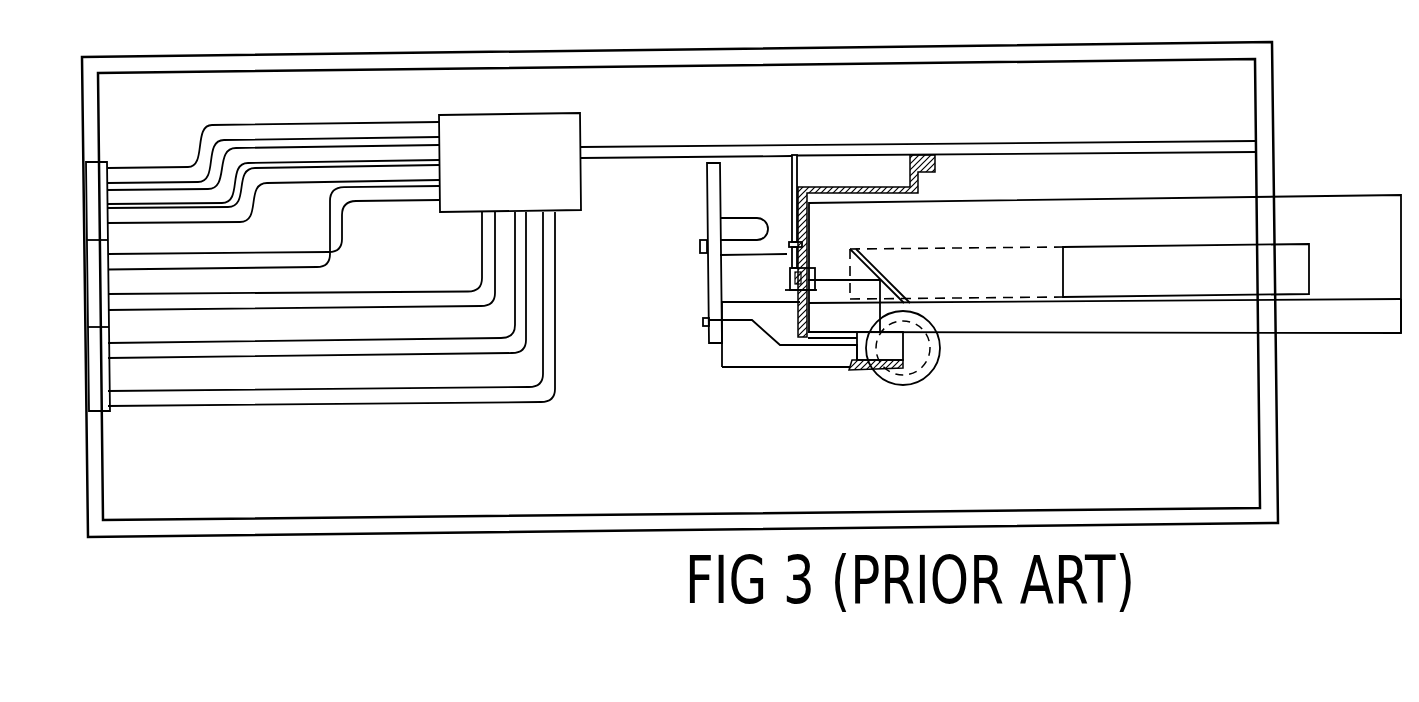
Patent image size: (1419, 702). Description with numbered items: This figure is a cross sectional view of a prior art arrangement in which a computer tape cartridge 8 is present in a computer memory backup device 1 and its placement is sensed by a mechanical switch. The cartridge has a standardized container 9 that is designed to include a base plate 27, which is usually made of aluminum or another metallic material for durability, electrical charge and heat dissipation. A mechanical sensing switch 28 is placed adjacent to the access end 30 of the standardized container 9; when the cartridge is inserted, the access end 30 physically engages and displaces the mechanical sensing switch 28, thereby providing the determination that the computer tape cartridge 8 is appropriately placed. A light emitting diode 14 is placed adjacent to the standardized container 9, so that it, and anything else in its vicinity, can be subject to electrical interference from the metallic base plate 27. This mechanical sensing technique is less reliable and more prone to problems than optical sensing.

The computer memory backup device 1 is at (850, 44).
The computer tape cartridge 8 is at (1295, 198).
The standardized container 9 is at (1141, 200).
The light emitting diode 14 is at (865, 373).
The base plate 27 is at (1381, 337).
The mechanical sensing switch 28 is at (815, 278).
The access end 30 is at (806, 212).